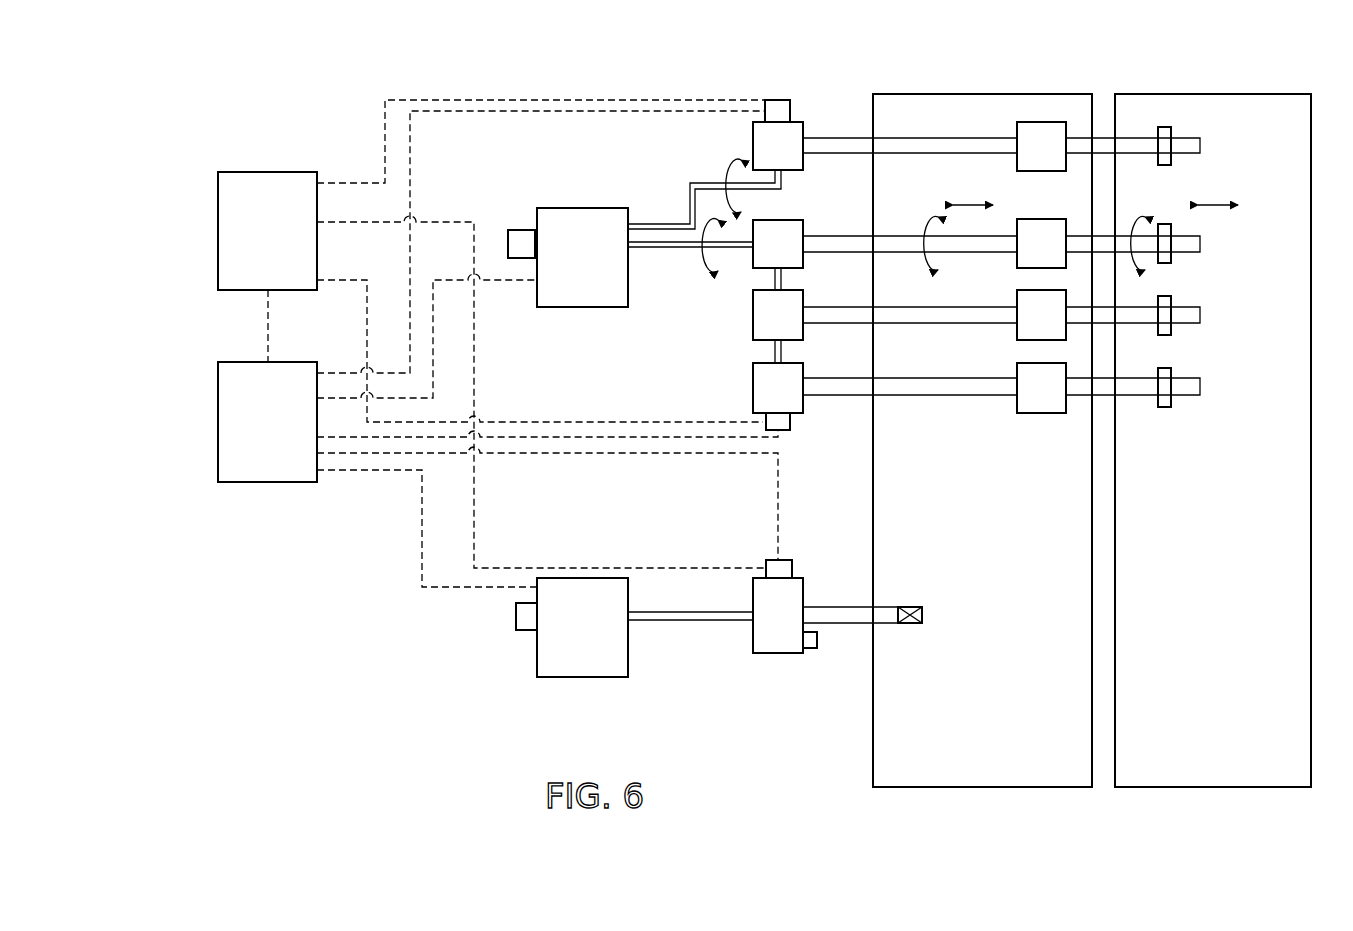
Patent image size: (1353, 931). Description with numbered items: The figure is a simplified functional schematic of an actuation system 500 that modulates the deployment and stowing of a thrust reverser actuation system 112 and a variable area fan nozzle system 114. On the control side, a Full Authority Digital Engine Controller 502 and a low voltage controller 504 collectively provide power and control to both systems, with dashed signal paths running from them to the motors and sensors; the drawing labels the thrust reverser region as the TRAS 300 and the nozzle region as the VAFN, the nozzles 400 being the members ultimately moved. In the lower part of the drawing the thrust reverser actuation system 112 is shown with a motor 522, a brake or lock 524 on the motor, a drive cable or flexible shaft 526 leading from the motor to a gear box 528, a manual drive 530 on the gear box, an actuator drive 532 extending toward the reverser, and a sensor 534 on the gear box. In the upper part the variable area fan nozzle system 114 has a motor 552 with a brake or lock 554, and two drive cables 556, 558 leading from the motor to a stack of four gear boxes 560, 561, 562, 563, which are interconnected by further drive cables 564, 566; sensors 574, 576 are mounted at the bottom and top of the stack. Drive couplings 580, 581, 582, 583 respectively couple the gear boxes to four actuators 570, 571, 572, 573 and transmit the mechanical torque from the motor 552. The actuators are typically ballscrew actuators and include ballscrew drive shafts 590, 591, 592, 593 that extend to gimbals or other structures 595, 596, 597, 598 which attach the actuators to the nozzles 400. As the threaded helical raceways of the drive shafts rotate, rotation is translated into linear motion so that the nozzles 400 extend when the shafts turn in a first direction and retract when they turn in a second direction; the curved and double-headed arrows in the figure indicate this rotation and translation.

The actuation system 500 is at (356, 80).
The Full Authority Digital Engine Controller (FADEC) 502 is at (245, 172).
The low voltage controller 504 is at (245, 362).
The motor 522 is at (580, 678).
The brake (or lock) 524 is at (522, 631).
The drive cable (or flexible shaft) 526 is at (700, 621).
The gear box 528 is at (775, 654).
The manual drive 530 is at (810, 649).
The actuator drive 532 is at (830, 607).
The sensor 534 is at (783, 560).
The motor 552 is at (590, 208).
The brake (or lock) 554 is at (520, 230).
The drive cable 556 is at (665, 250).
The drive cable 558 is at (668, 224).
The gear box 560 is at (753, 390).
The gear box 561 is at (753, 315).
The gear box 562 is at (780, 220).
The gear box 563 is at (753, 140).
The drive cable 564 is at (782, 352).
The drive cable 566 is at (782, 280).
The actuator 570 is at (1040, 413).
The actuator 571 is at (1017, 335).
The actuator 572 is at (1017, 262).
The actuator 573 is at (1017, 165).
The sensor 574 is at (790, 423).
The sensor 576 is at (784, 100).
The drive coupling 580 is at (893, 396).
The drive coupling 581 is at (893, 324).
The drive coupling 582 is at (893, 253).
The drive coupling 583 is at (893, 154).
The ballscrew drive shaft 590 is at (1130, 396).
The ballscrew drive shaft 591 is at (1128, 324).
The ballscrew drive shaft 592 is at (1165, 264).
The ballscrew drive shaft 593 is at (1128, 154).
The gimbal or other structure 595 is at (1172, 402).
The gimbal or other structure 596 is at (1172, 332).
The gimbal or other structure 597 is at (1172, 231).
The gimbal or other structure 598 is at (1172, 131).
The thrust reverser actuation system (TRAS) 112 is at (796, 718).
The variable area fan nozzle (VAFN) system 114 is at (840, 122).
The thrust reverser actuation system (TRAS) 300 is at (975, 788).
The nozzles 400 is at (1212, 788).